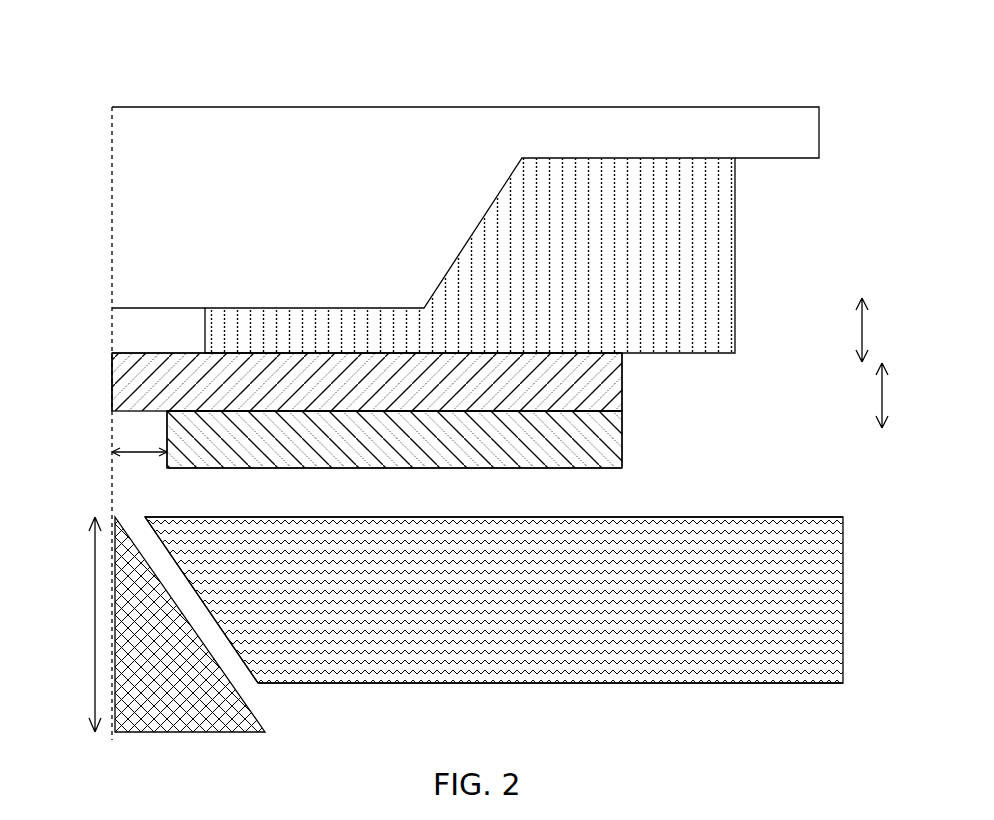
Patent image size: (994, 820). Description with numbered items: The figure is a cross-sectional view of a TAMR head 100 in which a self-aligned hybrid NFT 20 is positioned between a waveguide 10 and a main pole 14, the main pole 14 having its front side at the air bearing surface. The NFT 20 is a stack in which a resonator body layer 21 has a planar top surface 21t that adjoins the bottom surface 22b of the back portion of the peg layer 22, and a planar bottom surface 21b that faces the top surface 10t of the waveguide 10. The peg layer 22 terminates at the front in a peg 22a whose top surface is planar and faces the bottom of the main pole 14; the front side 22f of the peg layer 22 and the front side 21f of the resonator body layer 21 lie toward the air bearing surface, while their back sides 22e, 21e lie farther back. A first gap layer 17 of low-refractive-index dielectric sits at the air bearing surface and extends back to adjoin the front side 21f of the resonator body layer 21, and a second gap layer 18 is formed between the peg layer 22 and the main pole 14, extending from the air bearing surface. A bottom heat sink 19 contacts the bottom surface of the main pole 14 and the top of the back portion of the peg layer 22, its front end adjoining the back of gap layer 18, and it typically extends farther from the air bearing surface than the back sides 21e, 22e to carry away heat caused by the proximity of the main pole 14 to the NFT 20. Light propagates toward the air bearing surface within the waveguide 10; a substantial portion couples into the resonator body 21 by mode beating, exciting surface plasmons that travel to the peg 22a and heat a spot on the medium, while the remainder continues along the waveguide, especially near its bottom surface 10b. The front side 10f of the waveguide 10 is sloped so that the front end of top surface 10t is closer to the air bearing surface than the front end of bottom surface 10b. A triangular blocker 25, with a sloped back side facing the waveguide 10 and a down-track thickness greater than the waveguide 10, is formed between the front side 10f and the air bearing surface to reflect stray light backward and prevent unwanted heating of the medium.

The TAMR head 100 is at (117, 80).
The main pole 14 is at (288, 150).
The second gap layer 18 is at (130, 318).
The bottom heat sink 19 is at (697, 190).
The self-aligned hybrid NFT 20 is at (898, 302).
The peg layer 22 is at (622, 387).
The peg 22a is at (344, 355).
The front face of first adhesive layer 22f is at (112, 378).
The back side of peg layer 22e is at (622, 367).
The bottom surface of peg layer 22b is at (562, 408).
The resonator body layer 21 is at (623, 425).
The front face of second adhesive layer 21f is at (167, 423).
The back side of resonator body layer 21e is at (623, 455).
The top surface of resonator body layer 21t is at (448, 409).
The bottom surface of resonator body layer 21b is at (533, 468).
The first gap layer 17 is at (122, 437).
The waveguide 10 is at (795, 617).
The top surface of waveguide 10t is at (735, 518).
The bottom surface of waveguide 10b is at (708, 683).
The front side of waveguide 10f is at (220, 617).
The blocker 25 is at (193, 700).